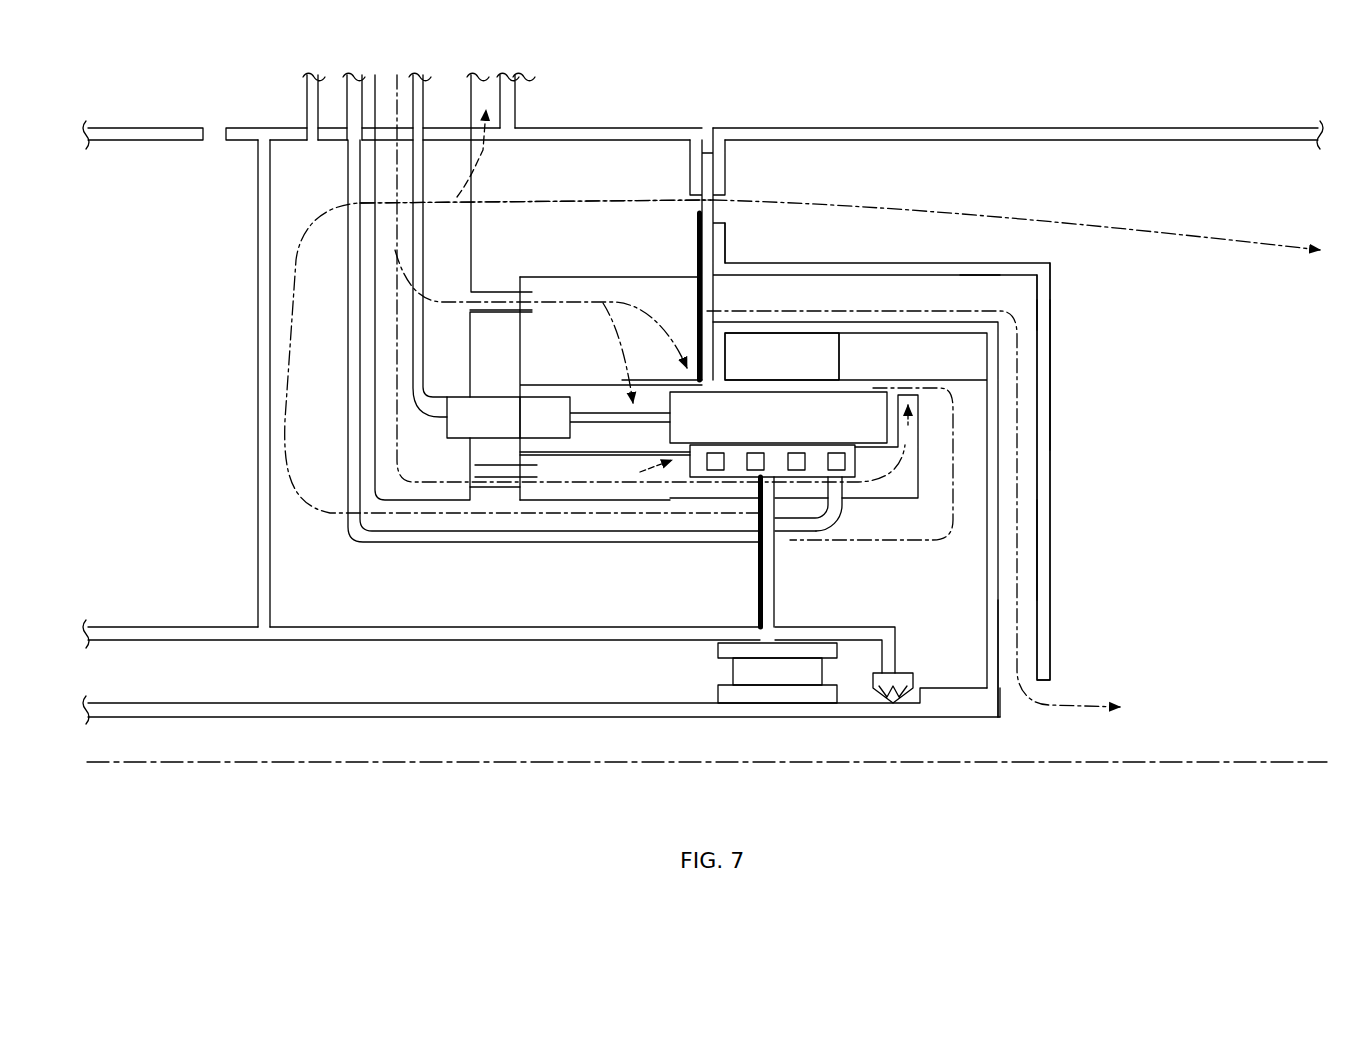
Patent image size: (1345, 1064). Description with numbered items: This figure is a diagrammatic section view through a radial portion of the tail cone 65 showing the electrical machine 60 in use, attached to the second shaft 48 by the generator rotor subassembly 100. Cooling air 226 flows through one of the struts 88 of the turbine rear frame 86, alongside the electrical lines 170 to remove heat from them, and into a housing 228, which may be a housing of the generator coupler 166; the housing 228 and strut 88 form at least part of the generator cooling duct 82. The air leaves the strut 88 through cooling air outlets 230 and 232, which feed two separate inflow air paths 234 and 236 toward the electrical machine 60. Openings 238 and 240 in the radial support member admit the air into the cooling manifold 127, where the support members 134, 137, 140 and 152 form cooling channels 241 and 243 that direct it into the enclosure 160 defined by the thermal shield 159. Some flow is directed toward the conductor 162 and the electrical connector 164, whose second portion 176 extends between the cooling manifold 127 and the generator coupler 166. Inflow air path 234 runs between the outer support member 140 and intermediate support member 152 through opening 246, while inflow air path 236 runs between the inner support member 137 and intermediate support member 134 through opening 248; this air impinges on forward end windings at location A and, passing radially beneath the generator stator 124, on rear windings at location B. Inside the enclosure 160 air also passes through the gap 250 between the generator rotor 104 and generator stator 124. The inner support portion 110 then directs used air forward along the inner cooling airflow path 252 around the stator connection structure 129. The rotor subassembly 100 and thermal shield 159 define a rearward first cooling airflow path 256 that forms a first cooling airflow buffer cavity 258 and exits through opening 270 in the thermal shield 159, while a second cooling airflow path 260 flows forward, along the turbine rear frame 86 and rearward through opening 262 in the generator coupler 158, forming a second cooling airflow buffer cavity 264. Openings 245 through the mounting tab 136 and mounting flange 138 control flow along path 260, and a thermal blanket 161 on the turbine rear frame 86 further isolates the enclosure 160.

The second shaft 48 is at (634, 721).
The electrical machine 60 is at (795, 305).
The tail cone 65 is at (994, 128).
The generator cooling duct 82 is at (478, 90).
The turbine rear frame 86 is at (228, 370).
The strut 88 is at (520, 92).
The generator rotor subassembly 100 is at (1010, 365).
The generator rotor 104 is at (780, 314).
The inner support portion 110 is at (1000, 602).
The generator stator 124 is at (871, 390).
The cooling manifold 127 is at (785, 404).
The stator connection structure 129 is at (886, 512).
The intermediate support member 134 is at (650, 454).
The mounting tab 136 is at (763, 533).
The inner support member 137 is at (646, 538).
The mounting flange 138 is at (759, 591).
The outer support member 140 is at (623, 284).
The intermediate support member 152 is at (659, 392).
The generator coupler 158 is at (700, 212).
The thermal shield 159 is at (1049, 384).
The enclosure 160 is at (1015, 555).
The thermal blanket 161 is at (264, 223).
The conductor 162 is at (658, 406).
The electrical connector 164 is at (534, 383).
The generator coupler 166 is at (405, 410).
The electrical lines 170 is at (426, 90).
The second portion 176 is at (492, 385).
The cooling air 226 is at (373, 165).
The housing 228 is at (366, 392).
The cooling air outlet 230 is at (519, 296).
The cooling air outlet 232 is at (496, 474).
The inflow air path 234 is at (568, 316).
The inflow air path 236 is at (610, 497).
The opening 238 is at (520, 305).
The opening 240 is at (528, 501).
The cooling channel 241 is at (548, 295).
The cooling channel 243 is at (575, 495).
The opening 245 is at (811, 521).
The opening 246 is at (706, 337).
The opening 248 is at (664, 500).
The gap 250 is at (838, 386).
The inner cooling airflow path 252 is at (934, 538).
The first cooling airflow path 256 is at (899, 314).
The first cooling airflow buffer cavity 258 is at (958, 315).
The second cooling airflow path 260 is at (536, 202).
The opening 262 is at (716, 207).
The second cooling airflow buffer cavity 264 is at (910, 255).
The opening 270 is at (1065, 695).
The location A is at (670, 421).
The location B is at (894, 423).